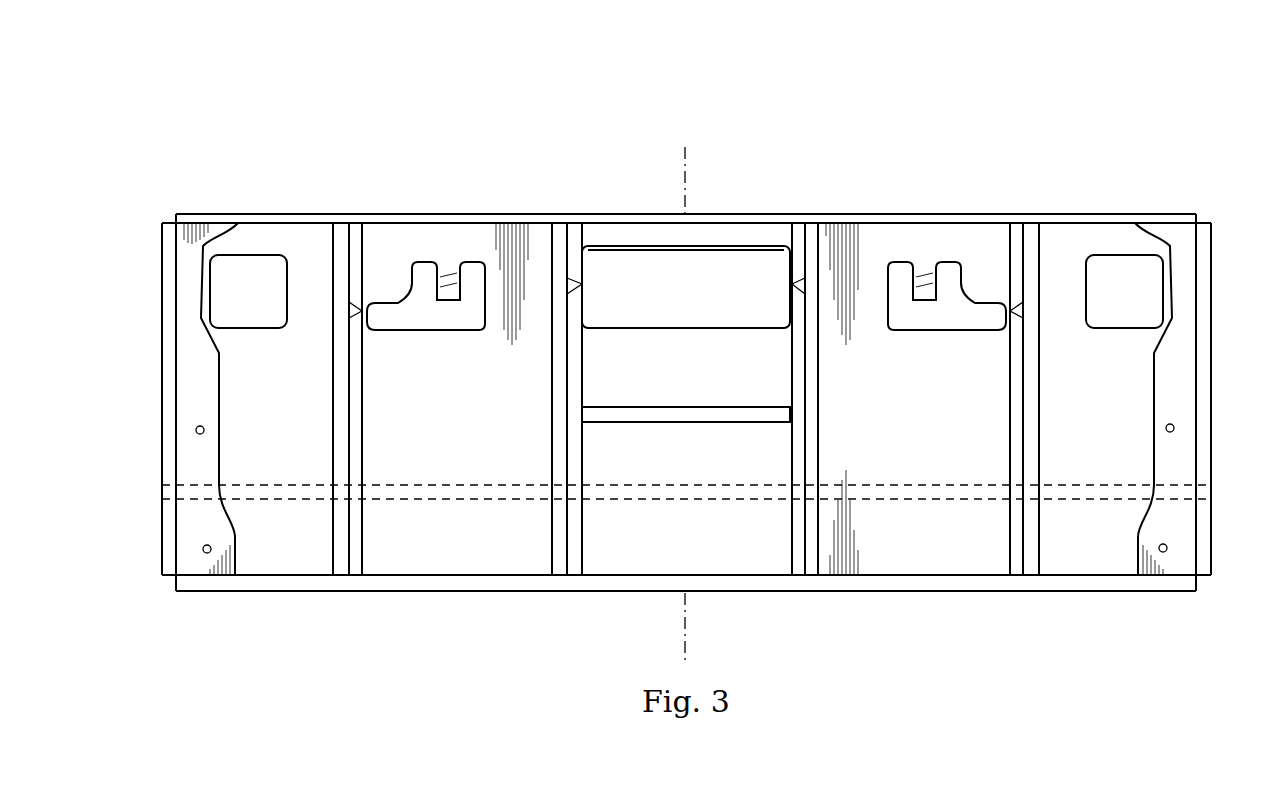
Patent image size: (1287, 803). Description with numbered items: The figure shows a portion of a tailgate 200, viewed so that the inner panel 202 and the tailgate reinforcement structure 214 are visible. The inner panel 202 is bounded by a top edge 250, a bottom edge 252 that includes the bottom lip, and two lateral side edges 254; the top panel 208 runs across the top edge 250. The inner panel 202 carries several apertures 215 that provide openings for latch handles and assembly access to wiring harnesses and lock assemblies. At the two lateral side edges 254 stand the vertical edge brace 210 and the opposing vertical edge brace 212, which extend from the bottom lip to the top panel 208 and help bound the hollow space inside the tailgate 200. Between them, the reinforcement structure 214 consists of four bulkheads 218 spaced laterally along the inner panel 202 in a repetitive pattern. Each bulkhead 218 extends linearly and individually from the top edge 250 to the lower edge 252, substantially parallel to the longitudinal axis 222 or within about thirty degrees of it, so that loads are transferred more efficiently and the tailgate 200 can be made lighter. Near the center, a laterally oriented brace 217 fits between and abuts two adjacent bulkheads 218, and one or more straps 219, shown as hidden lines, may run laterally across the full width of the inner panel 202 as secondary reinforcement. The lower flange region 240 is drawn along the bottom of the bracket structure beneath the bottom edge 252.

The tailgate 200 is at (198, 94).
The inner panel 202 is at (959, 565).
The top panel 208 is at (587, 207).
The vertical edge brace 210 is at (1144, 453).
The opposing vertical edge brace 212 is at (229, 454).
The tailgate reinforcement structure 214 is at (298, 181).
The apertures 215 is at (268, 328).
The lateral braces 217 is at (688, 424).
The bulkheads 218 is at (371, 421).
The straps 219 is at (760, 501).
The longitudinal axis 222 is at (690, 157).
The lower flange 240 is at (448, 600).
The top edge 250 is at (359, 207).
The bottom edge 252 is at (282, 593).
The lateral side edges 254 is at (160, 283).